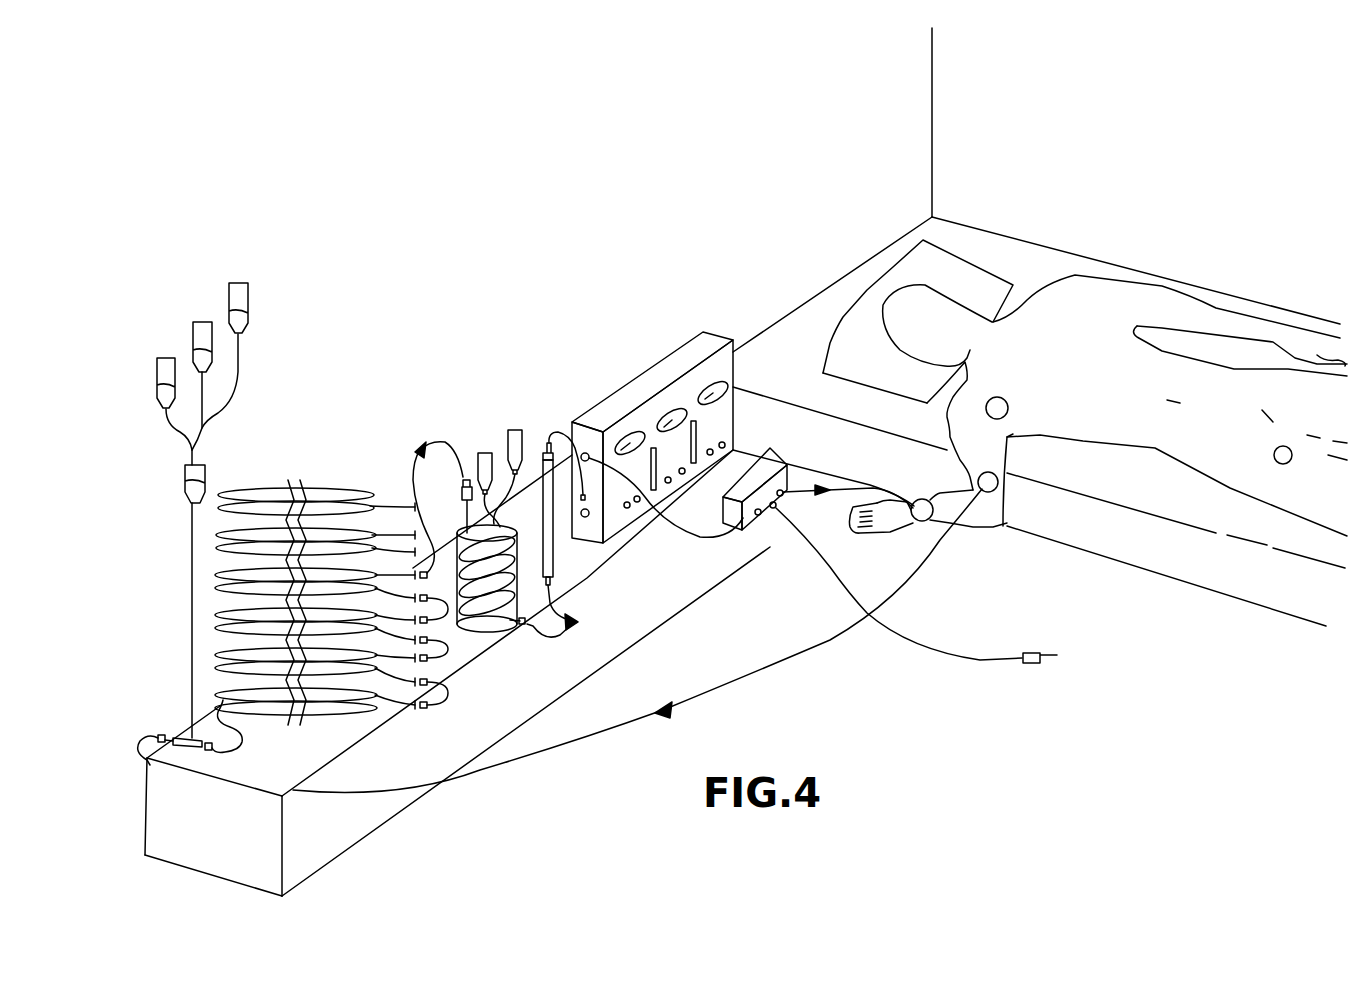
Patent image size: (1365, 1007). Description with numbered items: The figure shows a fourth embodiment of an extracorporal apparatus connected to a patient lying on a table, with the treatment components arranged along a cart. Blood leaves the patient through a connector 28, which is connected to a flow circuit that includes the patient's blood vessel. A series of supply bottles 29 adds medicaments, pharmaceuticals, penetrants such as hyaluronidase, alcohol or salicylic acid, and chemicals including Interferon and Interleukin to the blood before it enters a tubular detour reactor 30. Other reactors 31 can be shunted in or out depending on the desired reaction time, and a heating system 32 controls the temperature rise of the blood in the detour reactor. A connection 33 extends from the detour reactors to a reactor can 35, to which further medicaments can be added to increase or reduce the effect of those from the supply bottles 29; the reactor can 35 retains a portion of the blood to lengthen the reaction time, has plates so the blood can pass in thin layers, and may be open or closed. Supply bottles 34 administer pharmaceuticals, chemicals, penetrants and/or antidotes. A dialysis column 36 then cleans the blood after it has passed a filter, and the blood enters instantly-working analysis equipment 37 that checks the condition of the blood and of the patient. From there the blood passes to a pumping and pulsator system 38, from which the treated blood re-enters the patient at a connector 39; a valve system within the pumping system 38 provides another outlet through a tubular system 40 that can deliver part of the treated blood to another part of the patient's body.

The connector 28 is at (989, 493).
The supply bottles 29 is at (163, 413).
The tubular detour reactor 30 is at (270, 712).
The other reactors 31 is at (340, 545).
The heating system 32 is at (288, 500).
The connection 33 is at (443, 441).
The supply bottles 34 is at (492, 452).
The reactor can 35 is at (498, 624).
The dialysis column 36 is at (556, 552).
The analysis equipment 37 is at (637, 390).
The pumping and pulsator system 38 is at (760, 516).
The connector 39 is at (922, 499).
The tubular system 40 is at (1035, 664).